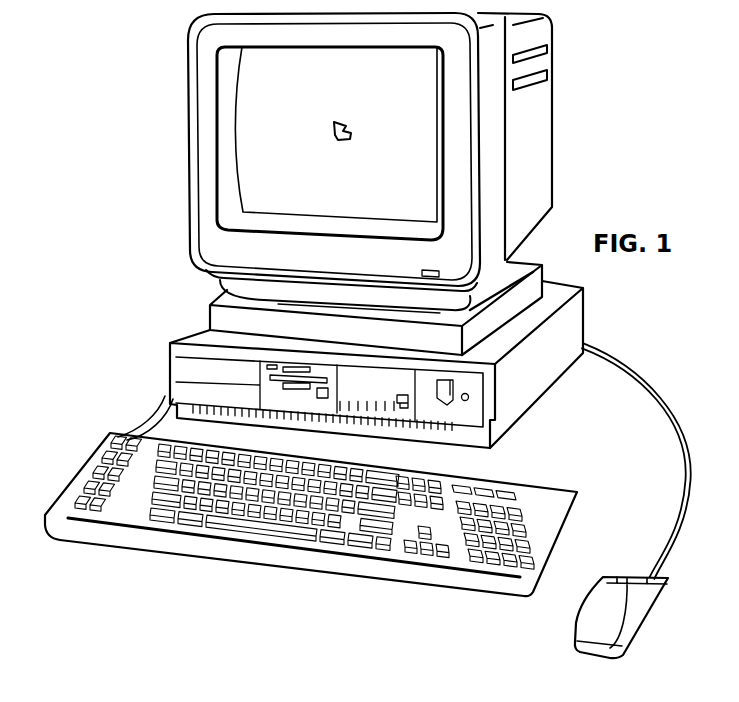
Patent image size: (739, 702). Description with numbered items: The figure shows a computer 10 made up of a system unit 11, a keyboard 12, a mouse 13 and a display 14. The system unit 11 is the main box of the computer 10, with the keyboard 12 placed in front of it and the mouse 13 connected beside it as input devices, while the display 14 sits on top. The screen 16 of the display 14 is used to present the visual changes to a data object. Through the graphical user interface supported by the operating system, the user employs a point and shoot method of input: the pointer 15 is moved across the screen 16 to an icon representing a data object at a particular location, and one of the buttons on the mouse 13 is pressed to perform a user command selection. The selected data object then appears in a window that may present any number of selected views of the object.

The computer 10 is at (135, 211).
The system unit 11 is at (169, 358).
The keyboard 12 is at (56, 538).
The mouse 13 is at (658, 612).
The display 14 is at (187, 138).
The pointer 15 is at (335, 122).
The screen 16 is at (304, 169).